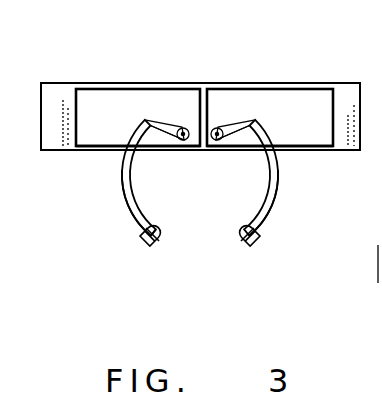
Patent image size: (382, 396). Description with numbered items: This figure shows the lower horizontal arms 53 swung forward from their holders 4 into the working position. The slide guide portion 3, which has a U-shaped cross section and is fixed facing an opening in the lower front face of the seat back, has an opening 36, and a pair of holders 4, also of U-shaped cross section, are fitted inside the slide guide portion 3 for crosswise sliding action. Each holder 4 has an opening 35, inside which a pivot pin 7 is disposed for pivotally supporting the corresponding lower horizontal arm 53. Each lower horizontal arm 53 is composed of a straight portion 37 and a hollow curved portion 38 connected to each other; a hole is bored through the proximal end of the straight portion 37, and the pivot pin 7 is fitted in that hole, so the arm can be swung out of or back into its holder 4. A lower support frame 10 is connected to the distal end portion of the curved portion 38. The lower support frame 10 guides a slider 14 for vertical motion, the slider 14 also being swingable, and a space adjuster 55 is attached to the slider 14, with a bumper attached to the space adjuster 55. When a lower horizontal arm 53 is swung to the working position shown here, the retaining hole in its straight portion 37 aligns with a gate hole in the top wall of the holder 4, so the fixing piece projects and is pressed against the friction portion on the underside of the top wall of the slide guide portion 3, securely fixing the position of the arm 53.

The slide guide portion 3 is at (350, 92).
The holder 4 is at (96, 98).
The pivot pin 7 is at (179, 151).
The lower support frame 10 is at (150, 241).
The slider 14 is at (163, 236).
The opening 35 is at (97, 151).
The opening 36 is at (57, 151).
The straight portion 37 is at (167, 122).
The hollow curved portion 38 is at (136, 232).
The lower horizontal arm 53 is at (124, 205).
The space adjuster 55 is at (163, 240).